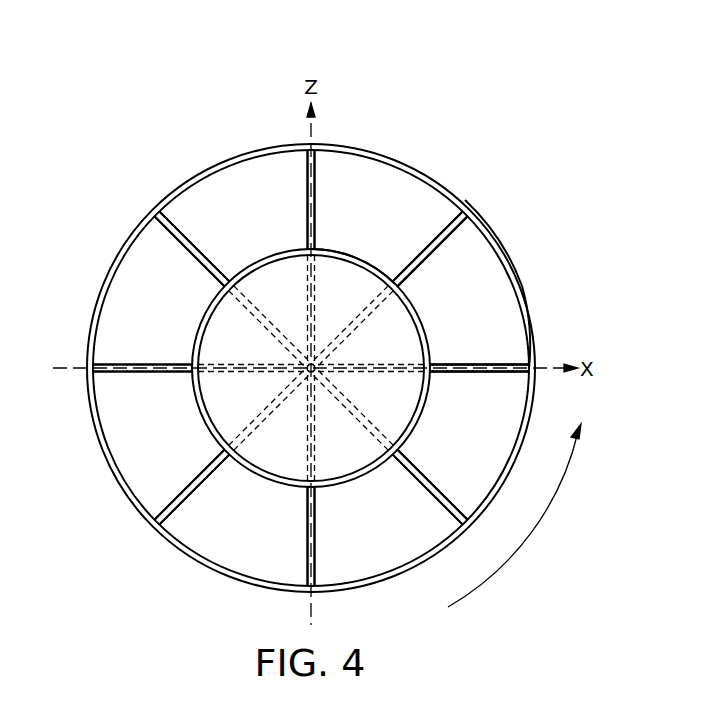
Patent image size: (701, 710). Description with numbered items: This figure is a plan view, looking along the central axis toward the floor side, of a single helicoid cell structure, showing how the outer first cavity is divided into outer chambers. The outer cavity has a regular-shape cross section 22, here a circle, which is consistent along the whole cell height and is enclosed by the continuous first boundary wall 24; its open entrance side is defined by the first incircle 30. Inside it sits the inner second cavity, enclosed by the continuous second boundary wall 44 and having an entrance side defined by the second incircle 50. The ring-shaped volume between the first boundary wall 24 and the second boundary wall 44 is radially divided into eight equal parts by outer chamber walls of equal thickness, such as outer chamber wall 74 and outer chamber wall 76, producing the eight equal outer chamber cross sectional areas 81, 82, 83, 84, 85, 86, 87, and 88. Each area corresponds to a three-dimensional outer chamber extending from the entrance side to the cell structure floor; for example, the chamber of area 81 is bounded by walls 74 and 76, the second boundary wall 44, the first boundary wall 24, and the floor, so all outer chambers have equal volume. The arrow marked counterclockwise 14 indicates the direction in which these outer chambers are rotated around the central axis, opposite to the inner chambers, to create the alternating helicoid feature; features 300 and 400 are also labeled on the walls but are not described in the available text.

The counterclockwise direction 14 is at (538, 528).
The regular-shape cross section 22 is at (264, 172).
The continuous first boundary wall 24 is at (520, 279).
The first incircle 30 is at (360, 147).
The continuous second boundary wall 44 is at (420, 352).
The second incircle 50 is at (293, 250).
The outer chamber wall 74 is at (456, 232).
The outer chamber wall 76 is at (508, 364).
The outer chamber cross sectional area 81 is at (461, 304).
The outer chamber cross sectional area 82 is at (463, 445).
The outer chamber cross sectional area 83 is at (371, 550).
The outer chamber cross sectional area 84 is at (233, 553).
The outer chamber cross sectional area 85 is at (130, 460).
The outer chamber cross sectional area 86 is at (124, 323).
The outer chamber cross sectional area 87 is at (216, 214).
The outer chamber cross sectional area 88 is at (355, 209).
The inner wall 300 is at (368, 278).
The outer wall 400 is at (486, 252).